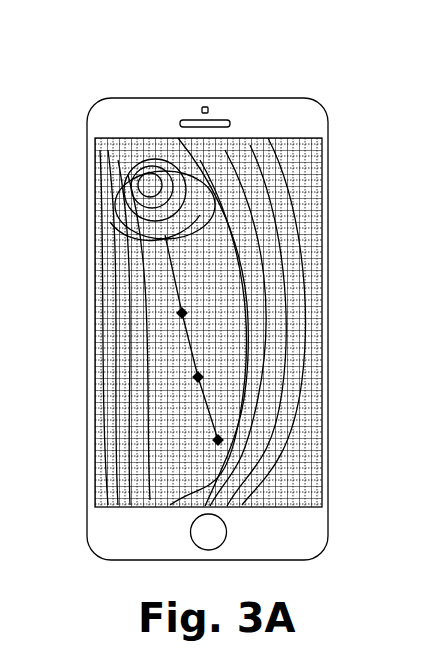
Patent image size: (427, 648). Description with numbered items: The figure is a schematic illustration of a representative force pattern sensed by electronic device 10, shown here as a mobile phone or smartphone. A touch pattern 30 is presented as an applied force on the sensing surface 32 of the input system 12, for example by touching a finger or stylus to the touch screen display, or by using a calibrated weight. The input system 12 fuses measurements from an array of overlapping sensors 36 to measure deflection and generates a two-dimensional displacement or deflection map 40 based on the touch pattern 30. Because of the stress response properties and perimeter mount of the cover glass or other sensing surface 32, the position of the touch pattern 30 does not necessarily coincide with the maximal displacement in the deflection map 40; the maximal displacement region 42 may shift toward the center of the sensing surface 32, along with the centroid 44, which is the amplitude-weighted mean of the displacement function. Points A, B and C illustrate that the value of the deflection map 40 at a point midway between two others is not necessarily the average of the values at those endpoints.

The electronic device 10 is at (95, 62).
The input system 12 is at (332, 168).
The touch pattern 30 is at (95, 150).
The sensing surface 32 is at (268, 140).
The maximal displacement region 42 is at (178, 138).
The centroid 44 is at (110, 222).
The sensors 36 is at (200, 350).
The deflection map 40 is at (294, 384).